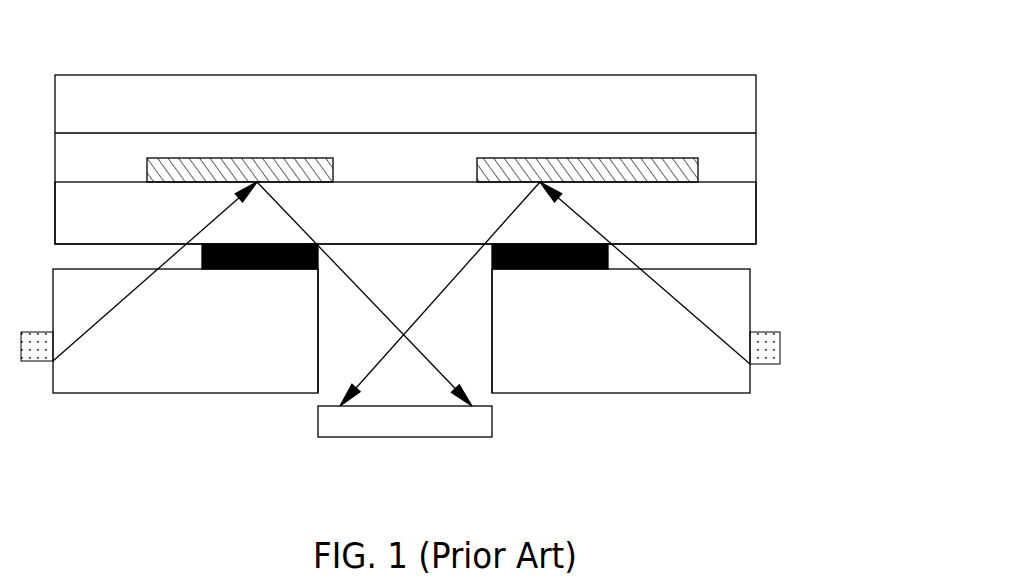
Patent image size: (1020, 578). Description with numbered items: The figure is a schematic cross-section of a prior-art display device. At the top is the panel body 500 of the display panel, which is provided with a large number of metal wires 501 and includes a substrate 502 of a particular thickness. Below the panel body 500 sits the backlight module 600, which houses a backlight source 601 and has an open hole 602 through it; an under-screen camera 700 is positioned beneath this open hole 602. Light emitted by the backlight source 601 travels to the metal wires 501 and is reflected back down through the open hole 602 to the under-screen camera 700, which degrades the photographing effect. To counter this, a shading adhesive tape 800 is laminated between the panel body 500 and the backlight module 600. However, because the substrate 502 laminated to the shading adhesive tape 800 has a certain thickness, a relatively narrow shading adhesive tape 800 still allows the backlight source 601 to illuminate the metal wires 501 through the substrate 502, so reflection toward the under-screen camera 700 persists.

The panel body 500 is at (762, 55).
The metal wires 501 is at (698, 165).
The substrate 502 is at (702, 220).
The shading adhesive tape 800 is at (607, 257).
The backlight module 600 is at (739, 417).
The backlight source 601 is at (780, 349).
The open hole 602 is at (400, 290).
The under-screen camera 700 is at (463, 422).